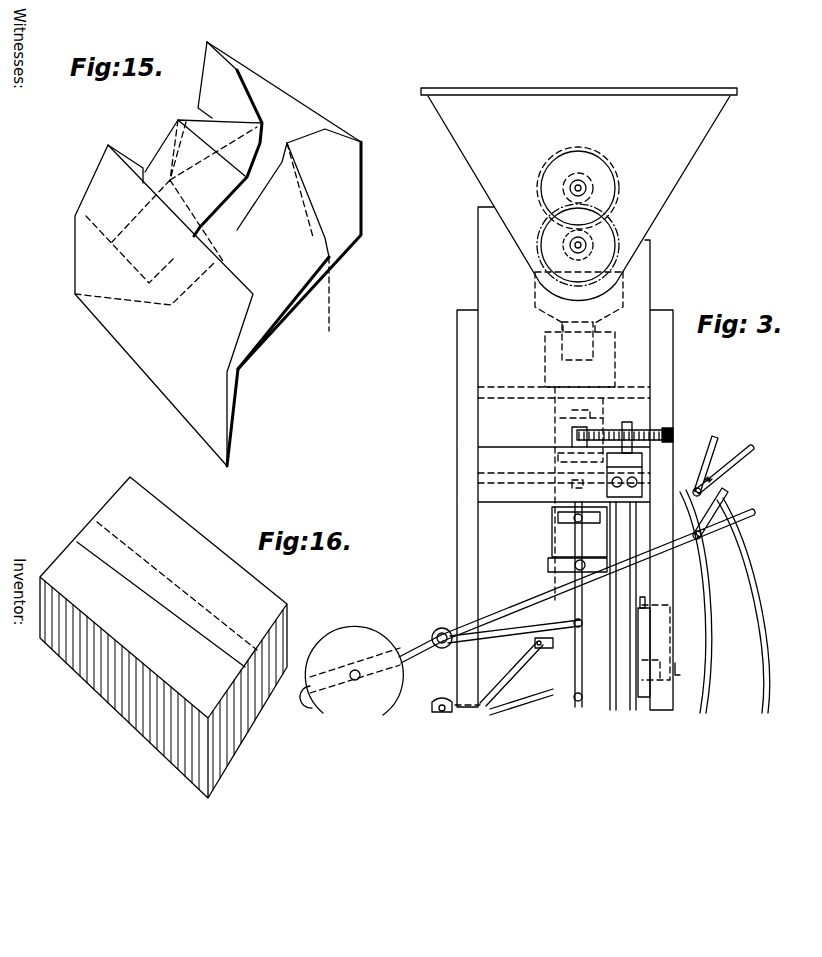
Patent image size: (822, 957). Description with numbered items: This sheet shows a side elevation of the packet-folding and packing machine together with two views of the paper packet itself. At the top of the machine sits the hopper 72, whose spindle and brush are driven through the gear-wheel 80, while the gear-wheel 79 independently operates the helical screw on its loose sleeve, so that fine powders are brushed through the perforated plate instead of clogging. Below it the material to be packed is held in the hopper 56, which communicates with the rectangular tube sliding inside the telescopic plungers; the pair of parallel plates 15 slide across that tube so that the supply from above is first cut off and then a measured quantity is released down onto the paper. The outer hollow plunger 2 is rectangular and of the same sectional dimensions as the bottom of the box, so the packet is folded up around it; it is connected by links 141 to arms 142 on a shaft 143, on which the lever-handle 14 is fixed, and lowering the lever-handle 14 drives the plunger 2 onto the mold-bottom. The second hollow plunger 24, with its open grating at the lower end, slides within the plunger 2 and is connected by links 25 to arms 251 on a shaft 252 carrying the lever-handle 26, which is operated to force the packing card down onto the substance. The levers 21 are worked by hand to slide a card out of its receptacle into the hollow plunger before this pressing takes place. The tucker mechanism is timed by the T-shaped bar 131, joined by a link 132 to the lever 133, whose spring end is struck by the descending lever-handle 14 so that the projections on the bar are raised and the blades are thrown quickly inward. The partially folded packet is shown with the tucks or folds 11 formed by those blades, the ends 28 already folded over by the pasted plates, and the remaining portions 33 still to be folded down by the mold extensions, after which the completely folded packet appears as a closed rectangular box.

In FIG. 3, the hollow plunger 2 is at (598, 692).
In FIG. 15, the tucks or folds 11 is at (335, 171).
In FIG. 3, the lever-handle 14 is at (496, 652).
In FIG. 3, the parallel plates 15 is at (570, 418).
In FIG. 3, the levers 21 is at (508, 672).
In FIG. 3, the second hollow plunger 24 is at (551, 521).
In FIG. 3, the links 25 is at (574, 545).
In FIG. 3, the lever-handle 26 is at (748, 525).
In FIG. 15, the ends of the packet 28 is at (174, 133).
In FIG. 15, the portions of the packet 33 is at (320, 86).
In FIG. 3, the hopper 56 is at (603, 371).
In FIG. 3, the hopper 72 is at (623, 92).
In FIG. 3, the gear-wheel 79 is at (605, 245).
In FIG. 3, the gear-wheel 80 is at (605, 188).
In FIG. 3, the T-shaped bar 131 is at (646, 700).
In FIG. 3, the link 132 is at (668, 637).
In FIG. 3, the lever 133 is at (680, 688).
In FIG. 3, the links 141 is at (580, 640).
In FIG. 3, the arms 142 is at (533, 703).
In FIG. 3, the shaft 143 is at (442, 713).
In FIG. 3, the arms 251 is at (520, 628).
In FIG. 3, the shaft 252 is at (432, 632).